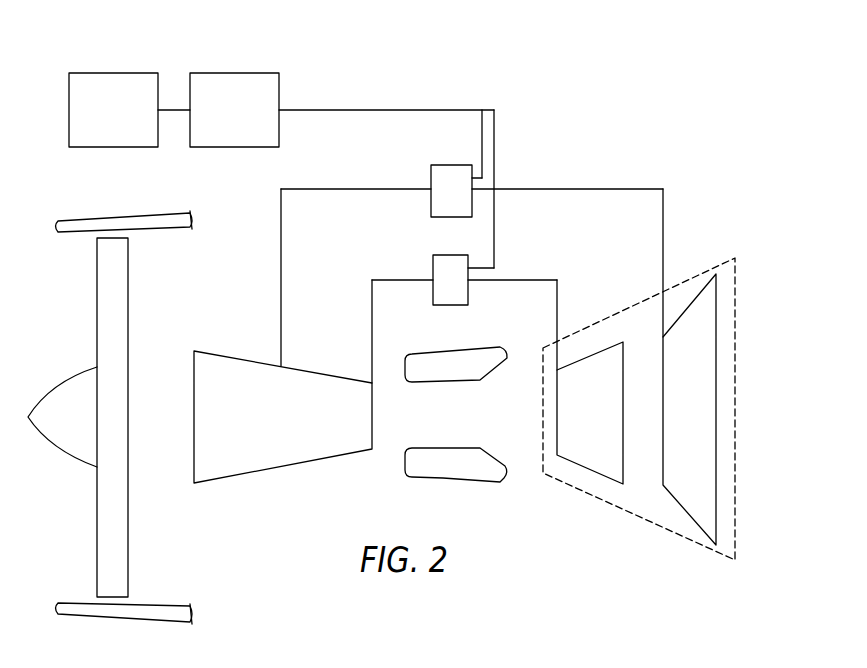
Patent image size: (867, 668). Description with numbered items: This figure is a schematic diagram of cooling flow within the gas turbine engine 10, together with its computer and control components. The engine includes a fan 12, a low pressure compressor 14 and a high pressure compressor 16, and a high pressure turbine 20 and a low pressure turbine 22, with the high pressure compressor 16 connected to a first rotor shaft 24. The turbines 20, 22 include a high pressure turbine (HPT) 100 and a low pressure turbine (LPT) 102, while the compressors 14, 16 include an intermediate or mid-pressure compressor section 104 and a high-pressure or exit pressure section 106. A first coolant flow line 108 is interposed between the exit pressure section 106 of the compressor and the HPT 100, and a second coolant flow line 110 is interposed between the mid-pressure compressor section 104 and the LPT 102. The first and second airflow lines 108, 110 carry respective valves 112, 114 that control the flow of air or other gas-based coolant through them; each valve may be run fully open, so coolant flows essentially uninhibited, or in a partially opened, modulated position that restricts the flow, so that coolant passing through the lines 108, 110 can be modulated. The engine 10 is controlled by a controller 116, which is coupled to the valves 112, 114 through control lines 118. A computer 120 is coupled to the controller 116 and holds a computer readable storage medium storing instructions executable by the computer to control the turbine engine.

The gas turbine engine 10 is at (712, 203).
The fan 12 is at (233, 375).
The low pressure compressor 14 is at (443, 385).
The high pressure compressor 16 is at (657, 523).
The high pressure turbine 20 is at (53, 440).
The low pressure turbine 22 is at (114, 583).
The first rotor shaft 24 is at (160, 213).
The high pressure turbine (HPT) 100 is at (583, 359).
The low pressure turbine (LPT) 102 is at (680, 315).
The mid-pressure compressor section 104 is at (282, 366).
The exit pressure section 106 is at (375, 380).
The first coolant flow line 108 is at (503, 279).
The second coolant flow line 110 is at (580, 188).
The valve 112 is at (432, 270).
The valve 114 is at (442, 164).
The controller 116 is at (250, 72).
The control lines 118 is at (483, 162).
The computer 120 is at (132, 72).